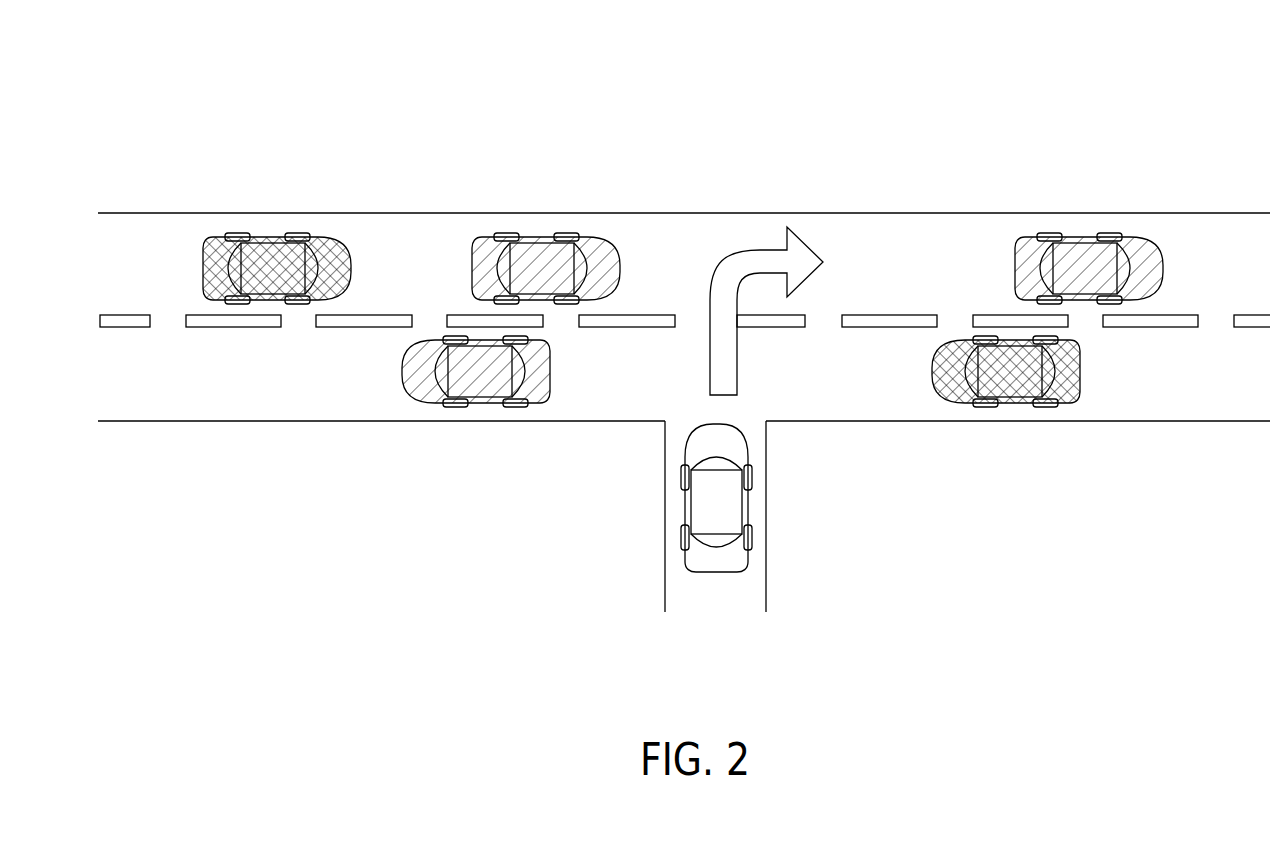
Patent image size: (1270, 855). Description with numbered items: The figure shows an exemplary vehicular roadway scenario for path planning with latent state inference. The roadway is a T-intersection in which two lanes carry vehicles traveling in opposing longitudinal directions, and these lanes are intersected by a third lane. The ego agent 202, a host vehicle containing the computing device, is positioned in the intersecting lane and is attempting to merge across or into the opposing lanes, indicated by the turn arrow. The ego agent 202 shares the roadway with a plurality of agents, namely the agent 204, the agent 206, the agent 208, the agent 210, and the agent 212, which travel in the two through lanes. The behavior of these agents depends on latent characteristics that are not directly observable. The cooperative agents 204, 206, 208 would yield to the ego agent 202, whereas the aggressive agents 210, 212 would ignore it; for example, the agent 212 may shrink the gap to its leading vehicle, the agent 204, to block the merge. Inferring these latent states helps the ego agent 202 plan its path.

The ego agent 202 is at (727, 508).
The agent 204 is at (490, 388).
The agent 206 is at (533, 235).
The agent 208 is at (1073, 255).
The agent 210 is at (262, 240).
The agent 212 is at (1020, 385).